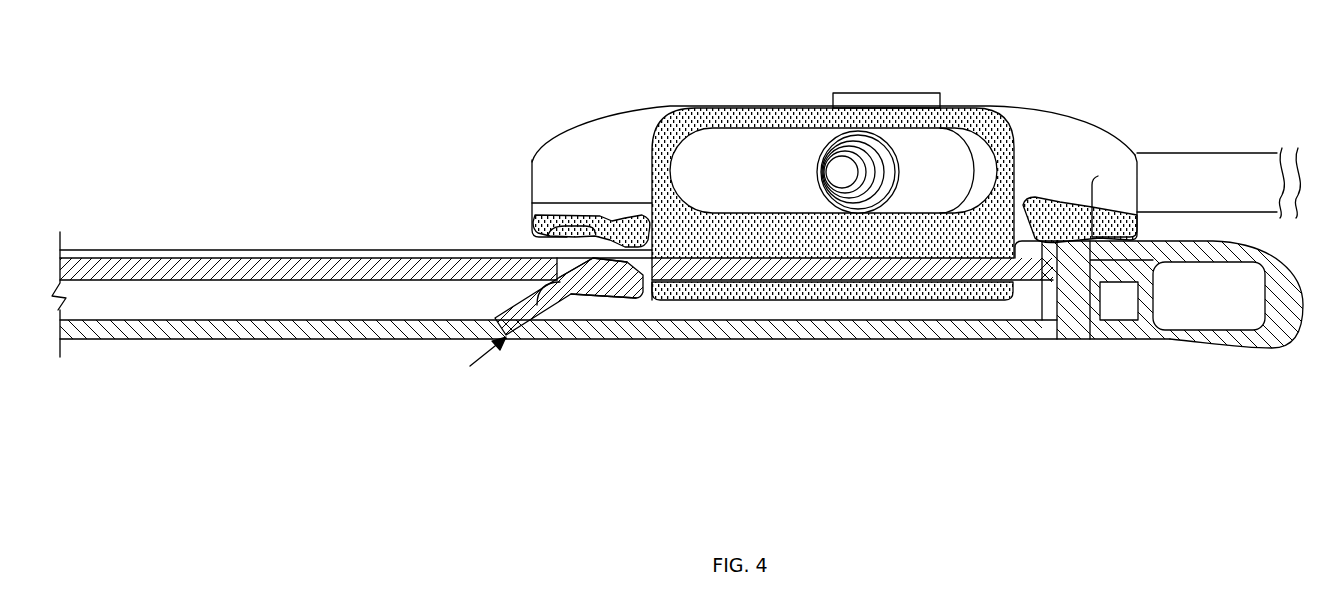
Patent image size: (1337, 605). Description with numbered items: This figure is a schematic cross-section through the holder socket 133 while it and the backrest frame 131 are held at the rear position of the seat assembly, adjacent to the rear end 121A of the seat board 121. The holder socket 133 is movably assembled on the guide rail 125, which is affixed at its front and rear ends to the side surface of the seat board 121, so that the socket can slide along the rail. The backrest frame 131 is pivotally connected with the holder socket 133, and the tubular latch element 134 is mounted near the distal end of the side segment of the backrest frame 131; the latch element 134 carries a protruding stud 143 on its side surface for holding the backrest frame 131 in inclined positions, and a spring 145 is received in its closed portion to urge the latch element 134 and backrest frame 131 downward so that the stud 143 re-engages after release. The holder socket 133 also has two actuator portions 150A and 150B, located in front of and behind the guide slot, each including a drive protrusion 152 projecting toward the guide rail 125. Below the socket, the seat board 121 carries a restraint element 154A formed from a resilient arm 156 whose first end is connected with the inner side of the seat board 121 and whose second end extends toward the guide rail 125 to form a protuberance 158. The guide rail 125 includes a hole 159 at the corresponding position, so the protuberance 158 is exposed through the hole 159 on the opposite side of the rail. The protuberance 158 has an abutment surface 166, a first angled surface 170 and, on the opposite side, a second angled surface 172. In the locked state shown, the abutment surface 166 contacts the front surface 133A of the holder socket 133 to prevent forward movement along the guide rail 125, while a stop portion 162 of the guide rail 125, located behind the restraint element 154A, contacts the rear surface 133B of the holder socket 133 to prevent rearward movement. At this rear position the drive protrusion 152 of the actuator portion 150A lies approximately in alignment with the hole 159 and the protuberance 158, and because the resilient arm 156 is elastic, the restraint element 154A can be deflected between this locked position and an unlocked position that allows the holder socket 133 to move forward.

The seat board 121 is at (848, 330).
The rear end of the seat board 121A is at (1286, 272).
The guide rail 125 is at (238, 268).
The backrest frame 131 is at (862, 108).
The holder socket 133 is at (720, 108).
The front surface of the holder socket 133A is at (655, 320).
The rear surface of the holder socket 133B is at (1005, 300).
The latch element 134 is at (822, 152).
The protruding stud 143 is at (905, 93).
The spring 145 is at (830, 118).
The actuator portion 150A is at (560, 218).
The actuator portion 150B is at (1095, 200).
The drive protrusion 152 is at (545, 245).
The restraint element 154A is at (456, 359).
The resilient arm 156 is at (523, 335).
The protuberance 158 is at (602, 330).
The hole 159 is at (556, 262).
The stop portion 162 is at (1030, 245).
The abutment surface 166 is at (635, 330).
The first angled surface 170 is at (663, 268).
The second angled surface 172 is at (556, 340).